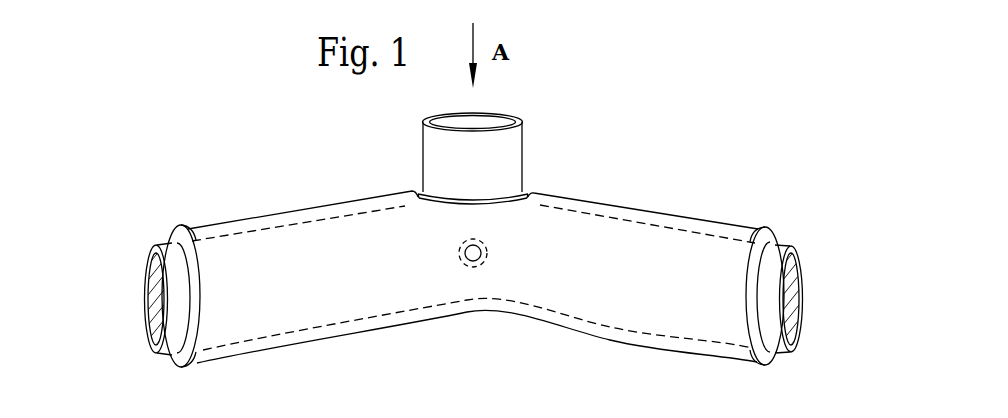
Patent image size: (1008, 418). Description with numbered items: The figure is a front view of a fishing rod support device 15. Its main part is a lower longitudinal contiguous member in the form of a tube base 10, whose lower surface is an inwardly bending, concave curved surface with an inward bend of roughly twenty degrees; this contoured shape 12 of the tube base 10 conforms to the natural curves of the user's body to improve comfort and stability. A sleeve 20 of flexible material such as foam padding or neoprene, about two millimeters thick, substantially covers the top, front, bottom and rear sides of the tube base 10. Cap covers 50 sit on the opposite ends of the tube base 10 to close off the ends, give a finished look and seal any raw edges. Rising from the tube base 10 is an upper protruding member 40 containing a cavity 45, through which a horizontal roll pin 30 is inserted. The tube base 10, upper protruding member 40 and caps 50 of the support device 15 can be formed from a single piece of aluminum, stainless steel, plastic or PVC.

The tube base 10 is at (300, 253).
The contoured shape 12 is at (480, 316).
The fishing rod support device 15 is at (714, 194).
The sleeve 20 is at (198, 365).
The roll pin 30 is at (486, 247).
The upper protruding member 40 is at (520, 117).
The cavity 45 is at (435, 118).
The cap covers 50 is at (147, 297).